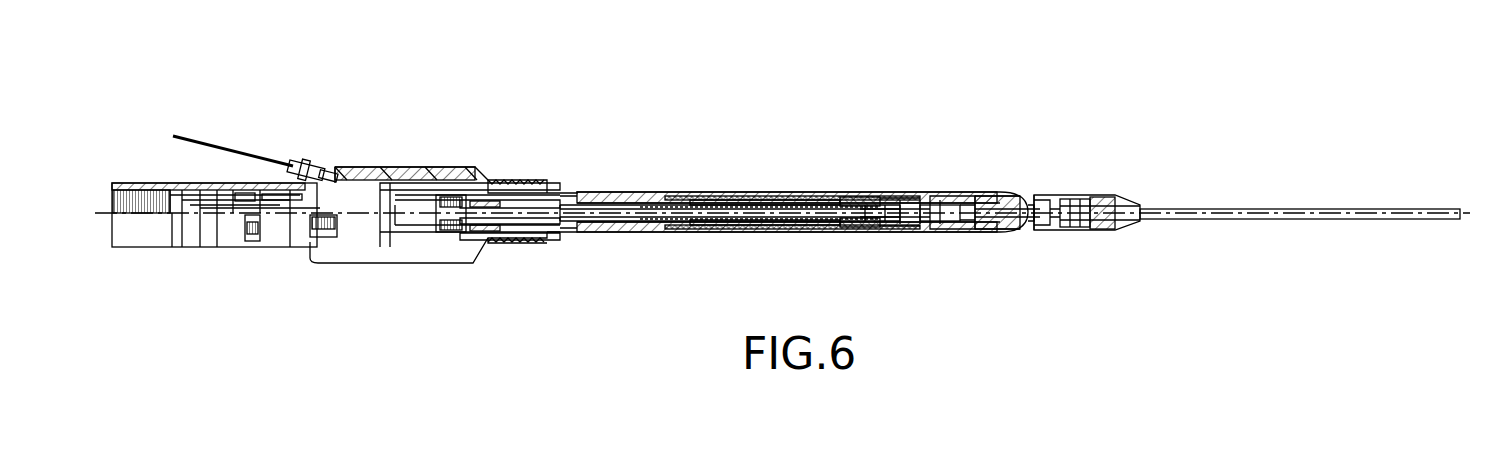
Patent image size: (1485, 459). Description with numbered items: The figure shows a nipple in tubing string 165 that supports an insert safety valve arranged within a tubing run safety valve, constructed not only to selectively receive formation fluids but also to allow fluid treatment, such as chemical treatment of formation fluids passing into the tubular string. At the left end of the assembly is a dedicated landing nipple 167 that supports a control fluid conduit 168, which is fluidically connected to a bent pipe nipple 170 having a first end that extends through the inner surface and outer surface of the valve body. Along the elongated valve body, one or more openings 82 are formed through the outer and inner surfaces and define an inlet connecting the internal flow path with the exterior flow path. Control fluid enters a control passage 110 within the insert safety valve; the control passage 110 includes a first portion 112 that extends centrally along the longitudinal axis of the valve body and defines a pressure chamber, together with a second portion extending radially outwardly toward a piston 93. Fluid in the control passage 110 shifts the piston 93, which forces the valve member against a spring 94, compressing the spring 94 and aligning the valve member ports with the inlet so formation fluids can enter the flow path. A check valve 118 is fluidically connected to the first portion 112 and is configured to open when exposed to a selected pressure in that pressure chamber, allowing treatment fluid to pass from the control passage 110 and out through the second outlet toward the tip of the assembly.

The nipple in tubing string 165 is at (457, 93).
The control fluid conduit 168 is at (189, 142).
The dedicated landing nipple 167 is at (309, 164).
The bent pipe nipple 170 is at (410, 230).
The openings 82 is at (566, 240).
The spring 94 is at (743, 229).
The control passage 110 is at (656, 212).
The piston 93 is at (830, 203).
The first portion 112 is at (978, 212).
The check valve 118 is at (1044, 214).